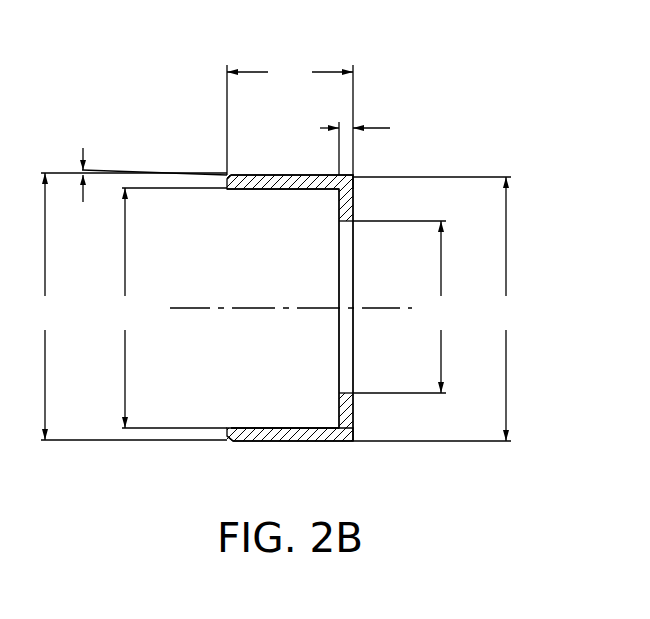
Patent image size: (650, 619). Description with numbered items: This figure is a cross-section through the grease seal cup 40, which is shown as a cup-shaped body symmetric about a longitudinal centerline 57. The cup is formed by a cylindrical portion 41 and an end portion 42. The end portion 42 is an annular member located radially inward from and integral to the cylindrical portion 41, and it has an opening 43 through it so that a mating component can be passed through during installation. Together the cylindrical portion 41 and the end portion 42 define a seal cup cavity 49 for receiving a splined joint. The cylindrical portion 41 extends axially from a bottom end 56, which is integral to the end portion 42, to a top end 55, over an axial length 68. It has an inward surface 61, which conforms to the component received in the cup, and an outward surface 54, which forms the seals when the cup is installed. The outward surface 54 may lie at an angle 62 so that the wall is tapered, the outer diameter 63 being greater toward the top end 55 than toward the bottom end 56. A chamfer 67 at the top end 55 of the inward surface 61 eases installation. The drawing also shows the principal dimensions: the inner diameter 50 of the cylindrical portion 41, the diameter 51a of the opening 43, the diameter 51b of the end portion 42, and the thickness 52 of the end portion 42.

The grease seal cup 40 is at (474, 103).
The cylindrical portion 41 is at (264, 180).
The end portion 42 is at (355, 410).
The opening 43 is at (347, 326).
The seal cup cavity 49 is at (299, 266).
The inner diameter 50 is at (168, 308).
The diameter of the opening 51a is at (407, 307).
The diameter of the end portion 51b is at (441, 309).
The thickness of the end portion 52 is at (388, 128).
The outward surface 54 is at (280, 443).
The top end 55 is at (227, 175).
The bottom end 56 is at (354, 177).
The longitudinal centerline 57 is at (228, 310).
The inward surface 61 is at (303, 428).
The angle 62 is at (150, 158).
The outer diameter 63 is at (129, 306).
The chamfer 67 is at (232, 443).
The axial length 68 is at (290, 117).